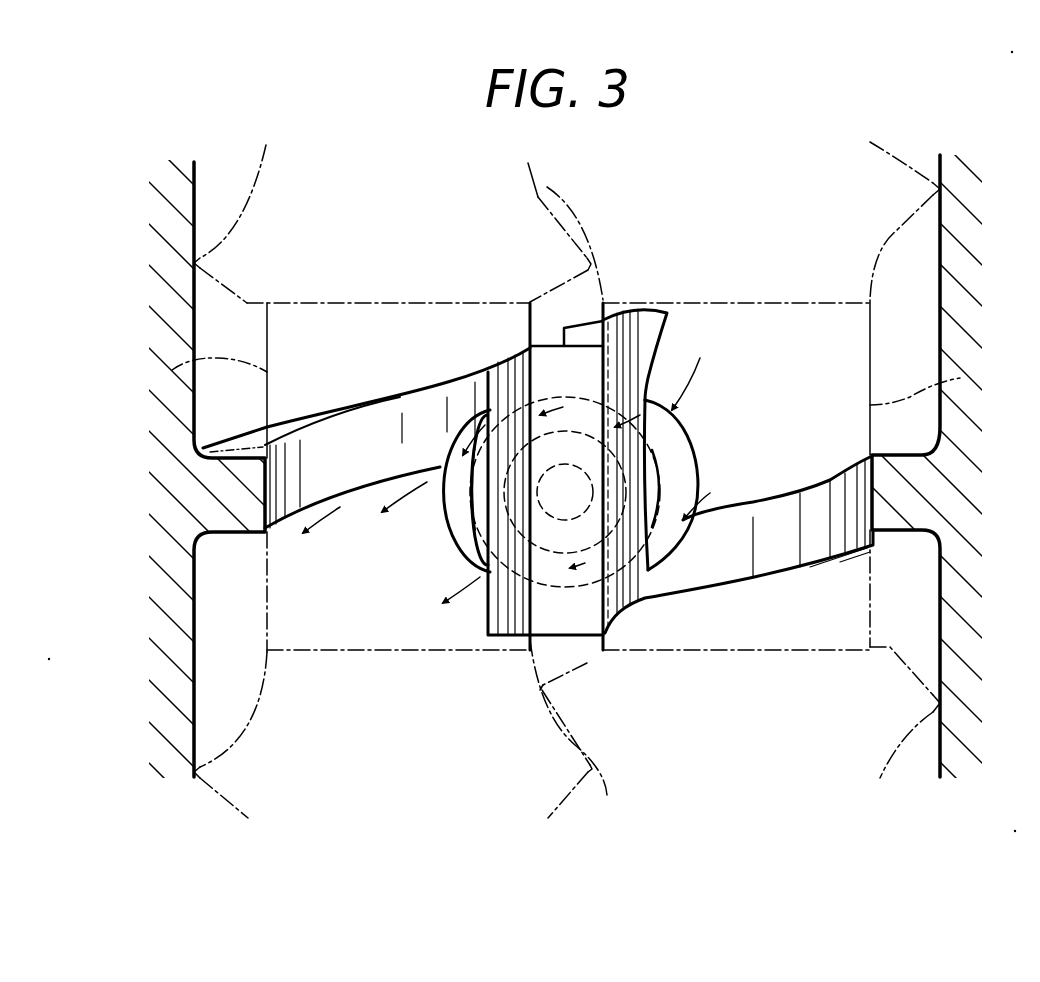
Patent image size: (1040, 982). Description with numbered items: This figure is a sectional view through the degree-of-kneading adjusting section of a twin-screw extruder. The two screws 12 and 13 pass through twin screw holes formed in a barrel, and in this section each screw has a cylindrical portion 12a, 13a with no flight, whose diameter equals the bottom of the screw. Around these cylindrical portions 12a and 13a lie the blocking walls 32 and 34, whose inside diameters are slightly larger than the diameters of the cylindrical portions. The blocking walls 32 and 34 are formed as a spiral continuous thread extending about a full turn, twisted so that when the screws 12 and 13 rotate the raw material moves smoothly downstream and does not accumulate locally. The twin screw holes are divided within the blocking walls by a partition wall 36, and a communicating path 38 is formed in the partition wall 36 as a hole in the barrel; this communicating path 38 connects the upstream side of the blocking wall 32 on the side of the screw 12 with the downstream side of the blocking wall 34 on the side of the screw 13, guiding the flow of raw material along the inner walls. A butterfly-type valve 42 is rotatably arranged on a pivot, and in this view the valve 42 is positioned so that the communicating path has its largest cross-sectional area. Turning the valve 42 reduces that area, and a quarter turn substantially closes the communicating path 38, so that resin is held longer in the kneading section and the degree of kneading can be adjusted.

The screw 12 is at (897, 230).
The cylindrical portion 12a is at (960, 378).
The screw 13 is at (240, 222).
The cylindrical portion 13a is at (173, 369).
The blocking wall 32 is at (807, 540).
The blocking wall 34 is at (291, 495).
The partition wall 36 is at (570, 622).
The communicating path 38 is at (675, 520).
The valve 42 is at (442, 537).